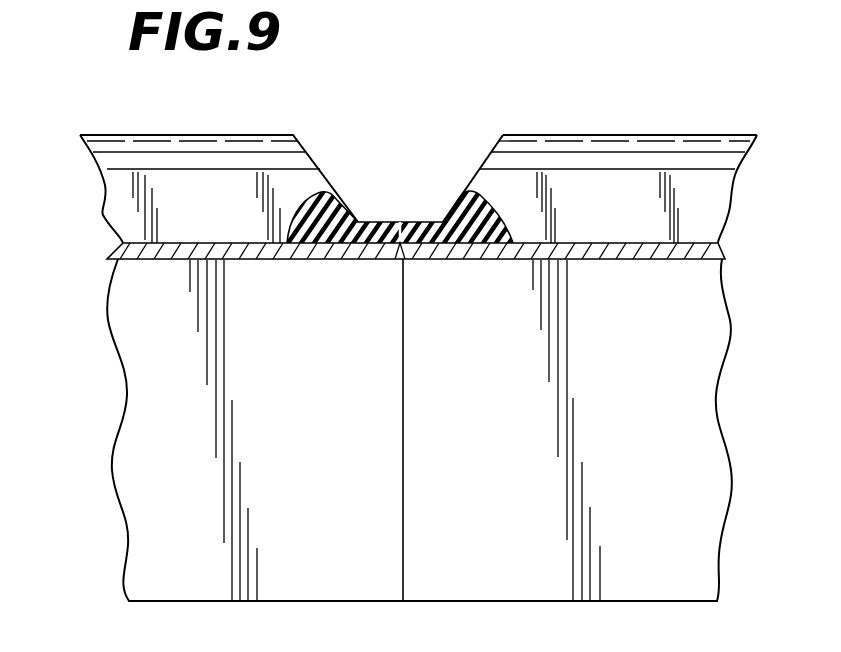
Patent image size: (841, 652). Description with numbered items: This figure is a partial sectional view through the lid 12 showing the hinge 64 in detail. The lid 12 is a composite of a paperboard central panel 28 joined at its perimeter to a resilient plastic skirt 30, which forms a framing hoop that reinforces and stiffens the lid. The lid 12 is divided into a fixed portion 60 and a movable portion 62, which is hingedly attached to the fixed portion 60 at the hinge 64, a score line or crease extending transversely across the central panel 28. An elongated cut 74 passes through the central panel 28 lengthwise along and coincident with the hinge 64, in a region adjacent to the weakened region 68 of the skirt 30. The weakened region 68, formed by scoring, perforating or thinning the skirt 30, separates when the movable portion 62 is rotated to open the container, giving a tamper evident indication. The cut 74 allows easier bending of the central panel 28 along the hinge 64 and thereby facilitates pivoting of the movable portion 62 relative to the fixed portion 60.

The lid 12 is at (578, 135).
The central panel 28 is at (638, 258).
The skirt 30 is at (128, 337).
The fixed portion 60 is at (670, 137).
The movable portion 62 is at (170, 135).
The hinge 64 is at (400, 222).
The weakened region 68 is at (403, 338).
The cut 74 is at (402, 260).